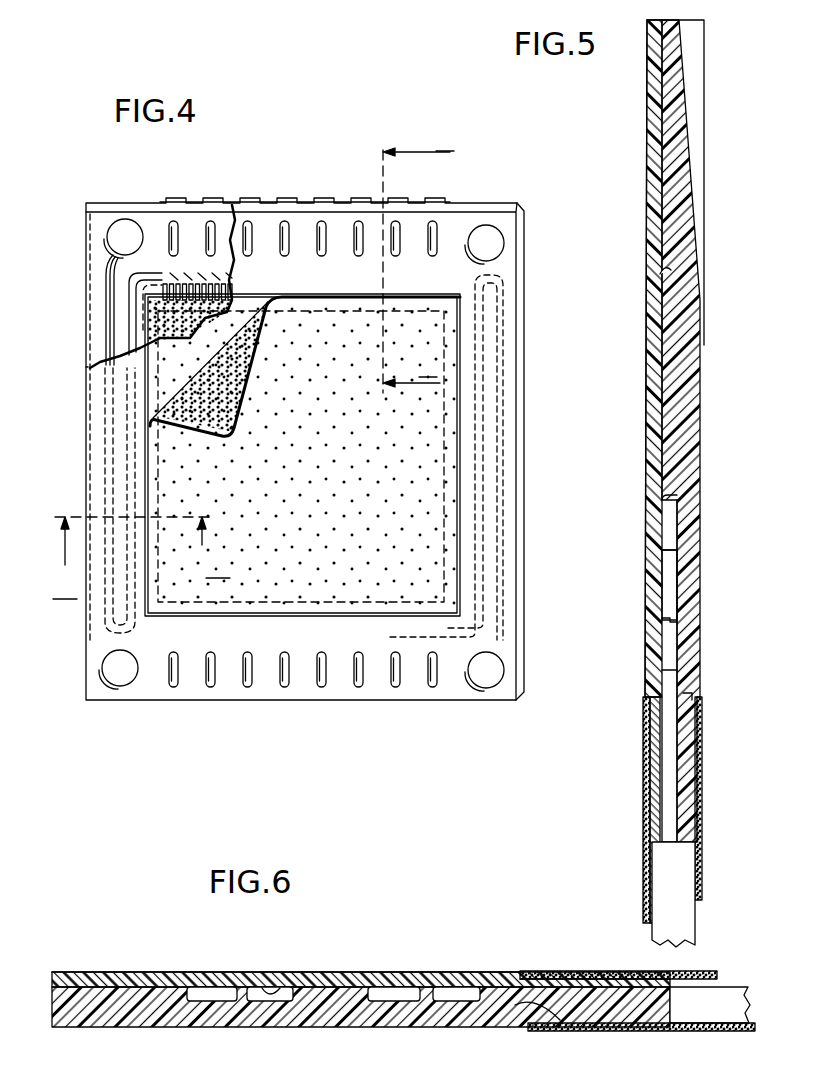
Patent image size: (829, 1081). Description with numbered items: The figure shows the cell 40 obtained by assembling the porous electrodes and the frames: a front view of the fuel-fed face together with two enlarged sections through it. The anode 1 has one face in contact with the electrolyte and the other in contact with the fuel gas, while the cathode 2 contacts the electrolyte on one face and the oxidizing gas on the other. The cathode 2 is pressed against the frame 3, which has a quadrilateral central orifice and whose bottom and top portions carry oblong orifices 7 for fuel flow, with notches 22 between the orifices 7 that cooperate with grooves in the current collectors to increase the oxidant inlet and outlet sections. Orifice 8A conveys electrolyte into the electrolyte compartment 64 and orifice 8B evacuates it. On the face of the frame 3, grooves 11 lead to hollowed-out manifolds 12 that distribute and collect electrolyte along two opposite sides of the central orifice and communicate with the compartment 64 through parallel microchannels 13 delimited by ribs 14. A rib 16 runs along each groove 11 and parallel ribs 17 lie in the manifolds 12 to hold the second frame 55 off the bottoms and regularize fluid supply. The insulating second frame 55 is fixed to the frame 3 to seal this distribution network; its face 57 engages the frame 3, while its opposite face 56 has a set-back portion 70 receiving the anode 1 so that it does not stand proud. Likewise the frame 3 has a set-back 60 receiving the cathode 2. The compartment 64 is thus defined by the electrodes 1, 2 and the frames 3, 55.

In FIG. 4, the anode 1 is at (277, 578).
In FIG. 5, the anode 1 is at (650, 860).
In FIG. 6, the anode 1 is at (598, 975).
In FIG. 4, the cathode 2 is at (172, 320).
In FIG. 5, the cathode 2 is at (697, 866).
In FIG. 6, the cathode 2 is at (698, 1031).
In FIG. 4, the frame 3 is at (148, 222).
In FIG. 5, the frame 3 is at (688, 420).
In FIG. 6, the frame 3 is at (123, 1018).
In FIG. 4, the orifices for fuel flow 7 is at (216, 235).
In FIG. 4, the inlet orifice 8A is at (122, 230).
In FIG. 4, the outlet orifice 8B is at (487, 672).
In FIG. 4, the grooves 11 is at (128, 345).
In FIG. 6, the grooves 11 is at (215, 995).
In FIG. 4, the electrolyte distributing and collecting manifolds 12 is at (178, 282).
In FIG. 5, the electrolyte distributing and collecting manifolds 12 is at (665, 528).
In FIG. 5, the microchannels 13 is at (668, 832).
In FIG. 5, the ribs 14 is at (660, 732).
In FIG. 4, the rib 16 is at (110, 302).
In FIG. 6, the rib 16 is at (233, 992).
In FIG. 5, the ribs 17 is at (667, 593).
In FIG. 4, the notches 22 is at (282, 200).
In FIG. 5, the notches 22 is at (697, 105).
In FIG. 4, the cell 40 is at (350, 188).
In FIG. 5, the cell 40 is at (628, 450).
In FIG. 4, the second frame 55 is at (95, 412).
In FIG. 5, the second frame 55 is at (647, 177).
In FIG. 6, the second frame 55 is at (124, 978).
In FIG. 4, the face of frame 55 56 is at (103, 457).
In FIG. 5, the face of frame 55 56 is at (638, 243).
In FIG. 6, the face of frame 55 56 is at (333, 962).
In FIG. 5, the face of frame 55 57 is at (668, 268).
In FIG. 6, the face of frame 55 57 is at (287, 997).
In FIG. 5, the set-back 60 is at (683, 698).
In FIG. 6, the set-back 60 is at (530, 1005).
In FIG. 5, the electrolyte compartment 64 is at (680, 892).
In FIG. 6, the electrolyte compartment 64 is at (713, 1008).
In FIG. 4, the set-back portion 70 is at (150, 397).
In FIG. 6, the set-back portion 70 is at (560, 975).